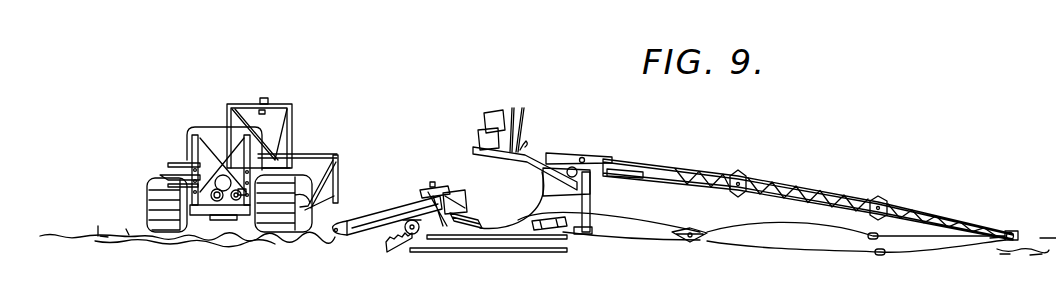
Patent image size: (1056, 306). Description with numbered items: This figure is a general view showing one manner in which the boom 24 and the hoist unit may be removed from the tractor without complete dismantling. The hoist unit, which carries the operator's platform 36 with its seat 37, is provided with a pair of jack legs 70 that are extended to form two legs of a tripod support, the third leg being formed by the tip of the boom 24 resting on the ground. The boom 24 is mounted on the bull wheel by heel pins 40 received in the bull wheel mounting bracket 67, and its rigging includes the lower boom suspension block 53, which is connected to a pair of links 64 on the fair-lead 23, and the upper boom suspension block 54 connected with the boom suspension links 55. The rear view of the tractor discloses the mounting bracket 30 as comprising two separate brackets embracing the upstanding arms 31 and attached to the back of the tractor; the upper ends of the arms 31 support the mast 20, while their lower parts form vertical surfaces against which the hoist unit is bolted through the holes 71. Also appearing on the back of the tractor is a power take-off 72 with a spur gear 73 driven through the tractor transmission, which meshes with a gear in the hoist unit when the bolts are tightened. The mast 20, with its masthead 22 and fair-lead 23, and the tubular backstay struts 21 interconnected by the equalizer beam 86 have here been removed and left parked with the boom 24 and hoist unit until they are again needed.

The mast 20 is at (384, 214).
The tubular backstay struts 21 is at (516, 240).
The masthead 22 is at (457, 194).
The fair-lead 23 is at (463, 213).
The boom 24 is at (813, 190).
The rear mounting bracket 30 is at (233, 173).
The upstanding arms 31 is at (214, 131).
The operator's platform 36 is at (477, 150).
The seat 37 is at (476, 127).
The heel pins 40 is at (588, 162).
The lower boom suspension block 53 is at (552, 231).
The upper boom suspension block 54 is at (695, 243).
The boom suspension links 55 is at (810, 247).
The links 64 is at (481, 225).
The bull wheel mounting bracket 67 is at (581, 159).
The jack legs 70 is at (592, 212).
The holes 71 is at (190, 181).
The power take-off 72 is at (218, 199).
The spur gear 73 is at (241, 200).
The equalizer beam 86 is at (382, 248).